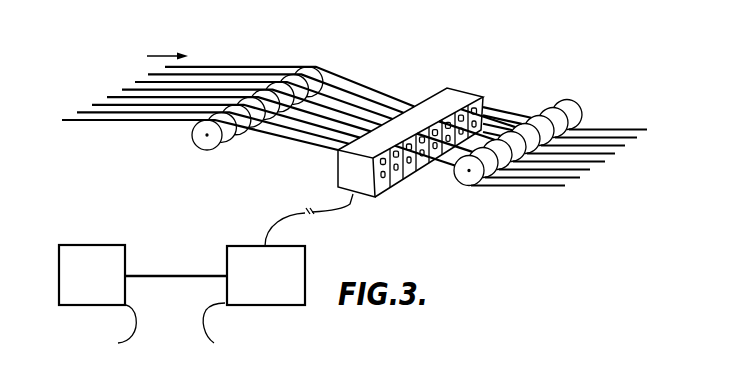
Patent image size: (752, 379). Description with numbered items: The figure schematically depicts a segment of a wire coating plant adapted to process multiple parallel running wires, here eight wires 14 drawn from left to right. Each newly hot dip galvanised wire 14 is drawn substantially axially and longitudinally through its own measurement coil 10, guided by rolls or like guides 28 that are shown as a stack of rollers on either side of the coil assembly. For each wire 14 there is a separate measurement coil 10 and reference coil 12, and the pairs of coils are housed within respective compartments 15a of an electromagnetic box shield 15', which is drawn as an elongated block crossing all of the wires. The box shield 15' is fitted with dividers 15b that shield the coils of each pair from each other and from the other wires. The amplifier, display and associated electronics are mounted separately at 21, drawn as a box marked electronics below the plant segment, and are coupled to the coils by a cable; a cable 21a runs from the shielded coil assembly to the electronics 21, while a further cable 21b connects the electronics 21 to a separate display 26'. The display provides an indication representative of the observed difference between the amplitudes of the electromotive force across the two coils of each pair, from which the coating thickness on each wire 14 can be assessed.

The measurement coil 10 is at (464, 107).
The reference coil 12 is at (429, 145).
The wire 14 is at (306, 141).
The electromagnetic box shield 15' is at (383, 142).
The compartment 15a is at (408, 178).
The divider 15b is at (430, 122).
The electronics 21 is at (277, 287).
The cable from sensor to electronics 21a is at (331, 217).
The cable 21b is at (175, 273).
The display 26' is at (81, 302).
The roll 28 is at (204, 150).